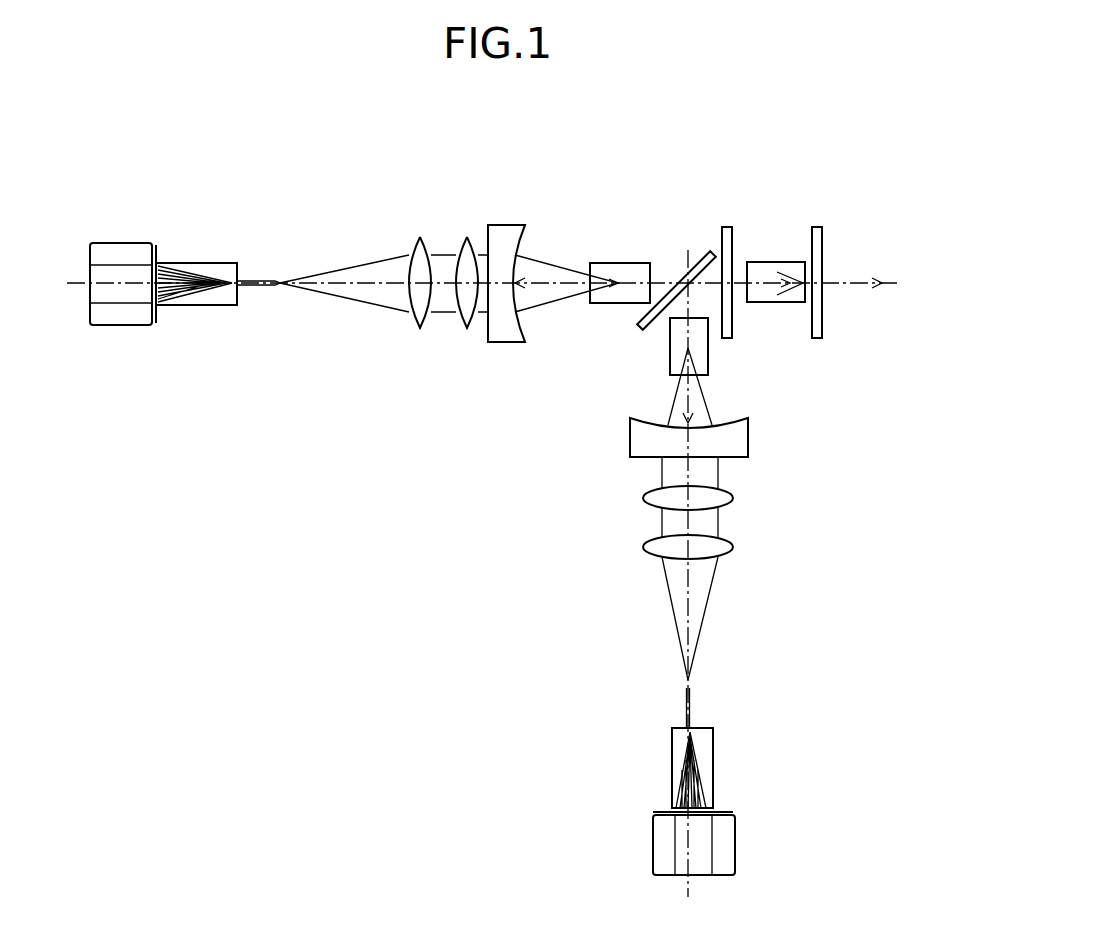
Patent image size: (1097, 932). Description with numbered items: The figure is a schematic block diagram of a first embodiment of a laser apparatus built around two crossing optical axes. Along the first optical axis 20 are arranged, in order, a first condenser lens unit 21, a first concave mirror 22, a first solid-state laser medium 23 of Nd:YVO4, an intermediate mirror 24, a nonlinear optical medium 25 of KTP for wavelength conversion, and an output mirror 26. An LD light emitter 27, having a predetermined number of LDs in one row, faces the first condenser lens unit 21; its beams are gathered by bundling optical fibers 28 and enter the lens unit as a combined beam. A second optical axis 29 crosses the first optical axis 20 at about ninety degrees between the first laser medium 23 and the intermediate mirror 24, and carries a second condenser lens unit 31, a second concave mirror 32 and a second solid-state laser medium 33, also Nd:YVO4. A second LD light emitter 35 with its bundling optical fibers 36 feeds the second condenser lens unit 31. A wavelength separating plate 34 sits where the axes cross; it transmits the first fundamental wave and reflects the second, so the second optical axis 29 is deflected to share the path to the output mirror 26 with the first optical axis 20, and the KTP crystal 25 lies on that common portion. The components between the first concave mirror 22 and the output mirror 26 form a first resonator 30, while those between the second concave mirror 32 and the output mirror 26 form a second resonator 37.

The first optical axis 20 is at (336, 280).
The first condenser lens unit 21 is at (485, 228).
The first concave mirror 22 is at (512, 224).
The first solid-state laser medium 23 is at (569, 323).
The intermediate mirror 24 is at (725, 227).
The nonlinear optical medium 25 is at (770, 303).
The output mirror 26 is at (816, 227).
The LD light emitter 27 is at (118, 244).
The bundling optical fibers 28 is at (204, 262).
The second optical axis 29 is at (693, 600).
The first resonator 30 is at (590, 322).
The second condenser lens unit 31 is at (750, 483).
The second concave mirror 32 is at (630, 446).
The second solid-state laser medium 33 is at (708, 347).
The wavelength separating plate 34 is at (700, 252).
The LD light emitter 35 is at (653, 851).
The bundling optical fibers 36 is at (672, 752).
The second resonator 37 is at (738, 371).